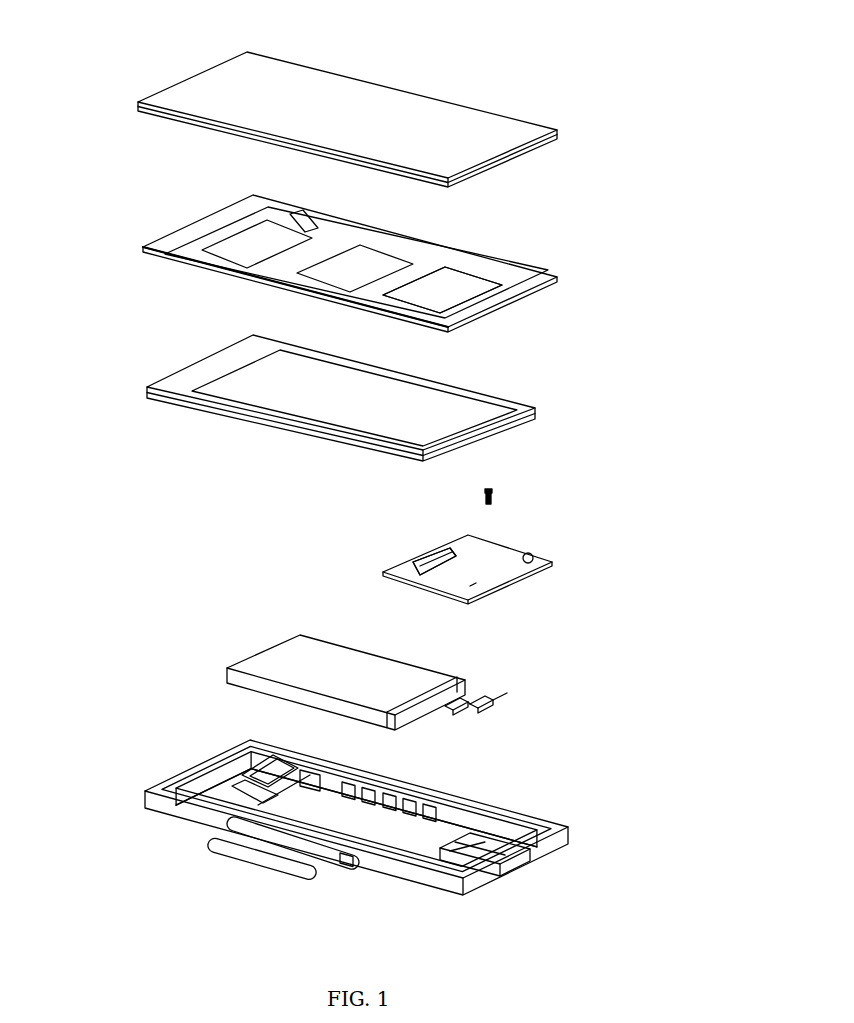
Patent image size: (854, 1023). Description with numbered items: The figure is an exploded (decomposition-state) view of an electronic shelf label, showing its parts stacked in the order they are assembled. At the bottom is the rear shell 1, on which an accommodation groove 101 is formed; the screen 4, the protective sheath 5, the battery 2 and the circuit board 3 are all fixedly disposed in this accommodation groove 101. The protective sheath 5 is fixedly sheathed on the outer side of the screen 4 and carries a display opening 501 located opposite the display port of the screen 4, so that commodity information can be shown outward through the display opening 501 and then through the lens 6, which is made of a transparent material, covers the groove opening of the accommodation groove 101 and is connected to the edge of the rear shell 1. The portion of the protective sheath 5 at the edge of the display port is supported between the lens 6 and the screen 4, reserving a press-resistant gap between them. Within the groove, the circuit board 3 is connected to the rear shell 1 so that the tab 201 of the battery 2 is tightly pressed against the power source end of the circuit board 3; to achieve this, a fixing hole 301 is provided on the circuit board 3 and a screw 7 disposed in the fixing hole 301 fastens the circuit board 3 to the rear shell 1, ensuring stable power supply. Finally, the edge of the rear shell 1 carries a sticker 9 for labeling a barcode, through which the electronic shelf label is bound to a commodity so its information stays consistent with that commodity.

The rear shell 1 is at (183, 772).
The accommodation groove 101 is at (392, 820).
The battery 2 is at (277, 652).
The tab 201 is at (488, 693).
The circuit board 3 is at (413, 562).
The fixing hole 301 is at (488, 560).
The screen 4 is at (473, 392).
The protective sheath 5 is at (540, 268).
The display opening 501 is at (445, 245).
The lens 6 is at (478, 110).
The screw 7 is at (495, 492).
The sticker 9 is at (240, 858).